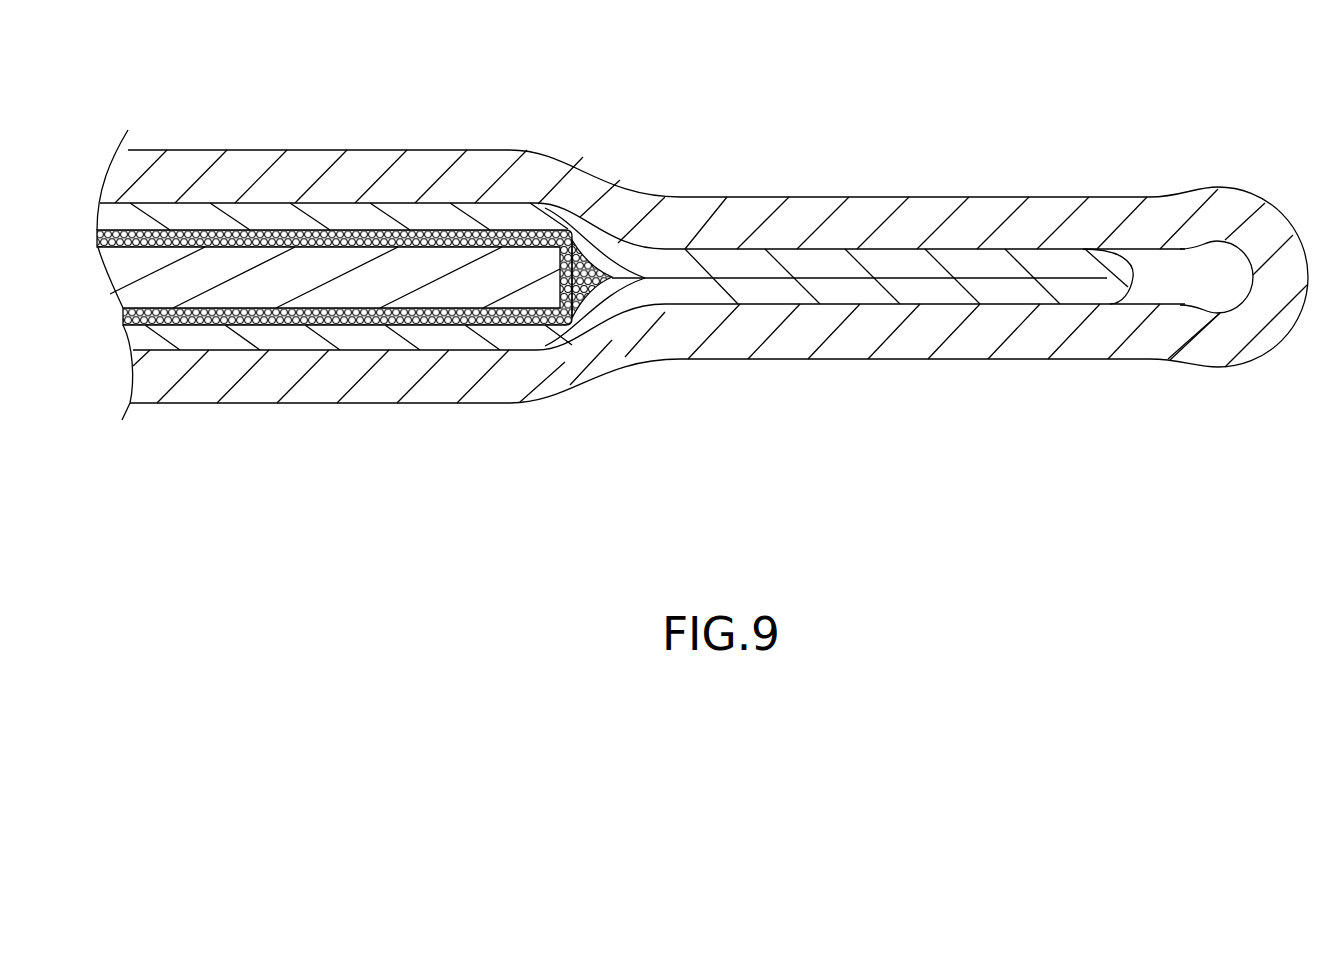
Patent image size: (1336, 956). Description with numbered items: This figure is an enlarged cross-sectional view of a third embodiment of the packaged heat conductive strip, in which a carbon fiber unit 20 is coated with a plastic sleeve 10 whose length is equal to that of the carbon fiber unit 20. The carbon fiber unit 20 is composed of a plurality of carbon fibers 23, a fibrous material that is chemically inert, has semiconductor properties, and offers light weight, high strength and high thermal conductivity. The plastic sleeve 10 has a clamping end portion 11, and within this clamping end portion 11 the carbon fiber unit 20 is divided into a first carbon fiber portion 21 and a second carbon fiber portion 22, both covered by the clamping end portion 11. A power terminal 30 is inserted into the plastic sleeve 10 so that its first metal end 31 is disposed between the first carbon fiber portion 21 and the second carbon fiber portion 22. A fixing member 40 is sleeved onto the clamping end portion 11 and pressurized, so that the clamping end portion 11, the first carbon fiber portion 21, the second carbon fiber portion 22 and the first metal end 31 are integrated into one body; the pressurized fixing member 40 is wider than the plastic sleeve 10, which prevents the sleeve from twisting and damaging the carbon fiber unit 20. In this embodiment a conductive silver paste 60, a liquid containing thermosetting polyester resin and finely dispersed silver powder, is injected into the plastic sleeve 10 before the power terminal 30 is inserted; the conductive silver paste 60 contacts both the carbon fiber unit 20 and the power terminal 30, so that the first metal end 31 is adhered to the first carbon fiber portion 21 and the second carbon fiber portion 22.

The plastic sleeve 10 is at (1026, 254).
The clamping end portion 11 is at (1023, 293).
The carbon fiber unit 20 is at (262, 231).
The first carbon fiber portion 21 is at (357, 229).
The second carbon fiber portion 22 is at (347, 327).
The carbon fibers 23 is at (563, 248).
The power terminal 30 is at (335, 360).
The first metal end 31 is at (272, 284).
The fixing member 40 is at (950, 197).
The conductive silver paste 60 is at (583, 281).